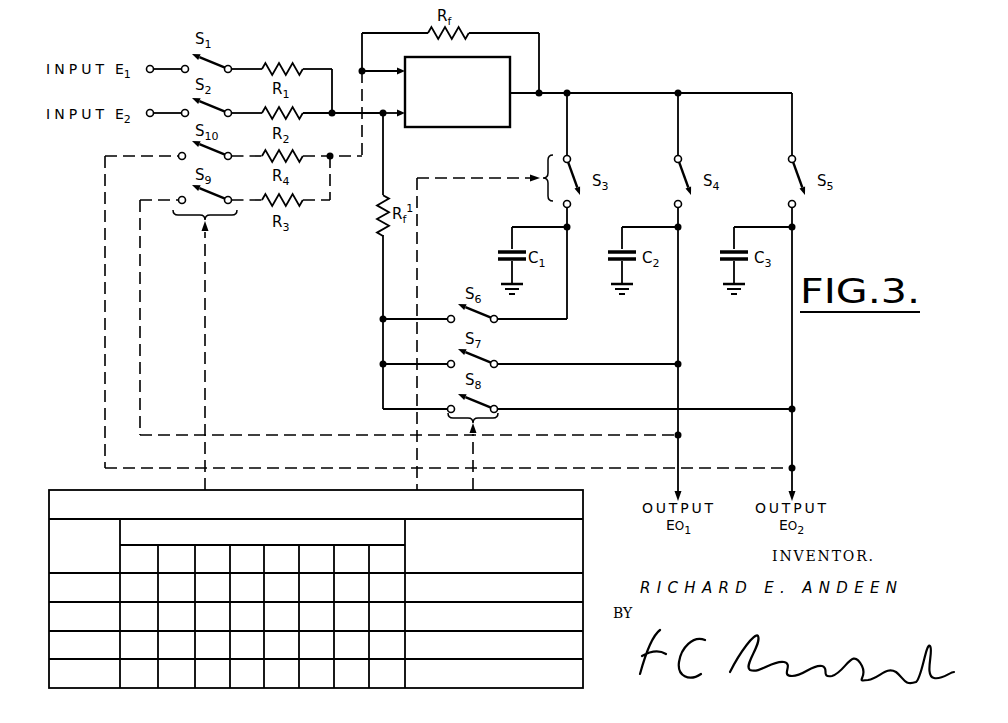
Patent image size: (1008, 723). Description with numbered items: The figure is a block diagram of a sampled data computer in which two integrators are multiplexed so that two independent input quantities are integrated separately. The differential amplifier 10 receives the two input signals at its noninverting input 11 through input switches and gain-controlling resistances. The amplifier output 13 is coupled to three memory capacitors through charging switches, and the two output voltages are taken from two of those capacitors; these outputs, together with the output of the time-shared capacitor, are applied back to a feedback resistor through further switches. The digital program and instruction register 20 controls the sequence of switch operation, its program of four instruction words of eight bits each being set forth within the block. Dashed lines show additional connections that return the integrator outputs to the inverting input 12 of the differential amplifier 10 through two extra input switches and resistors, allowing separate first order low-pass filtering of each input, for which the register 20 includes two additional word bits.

The differential amplifier 10 is at (462, 128).
The noninverting input 11 is at (390, 117).
The inverting input 12 is at (386, 69).
The amplifier output 13 is at (538, 96).
The digital program and instruction register 20 is at (66, 489).